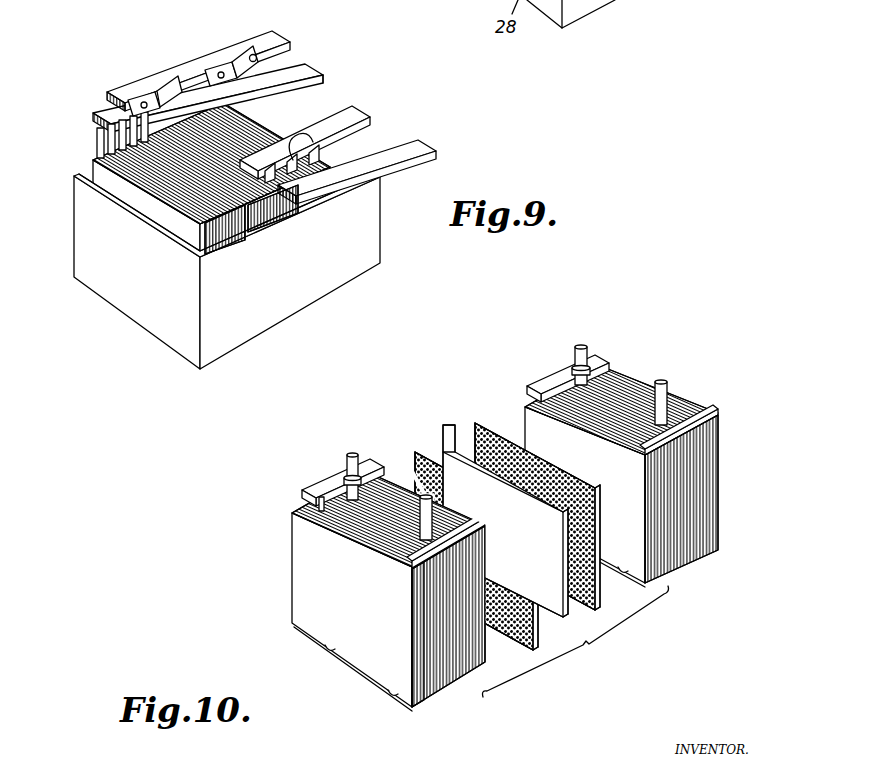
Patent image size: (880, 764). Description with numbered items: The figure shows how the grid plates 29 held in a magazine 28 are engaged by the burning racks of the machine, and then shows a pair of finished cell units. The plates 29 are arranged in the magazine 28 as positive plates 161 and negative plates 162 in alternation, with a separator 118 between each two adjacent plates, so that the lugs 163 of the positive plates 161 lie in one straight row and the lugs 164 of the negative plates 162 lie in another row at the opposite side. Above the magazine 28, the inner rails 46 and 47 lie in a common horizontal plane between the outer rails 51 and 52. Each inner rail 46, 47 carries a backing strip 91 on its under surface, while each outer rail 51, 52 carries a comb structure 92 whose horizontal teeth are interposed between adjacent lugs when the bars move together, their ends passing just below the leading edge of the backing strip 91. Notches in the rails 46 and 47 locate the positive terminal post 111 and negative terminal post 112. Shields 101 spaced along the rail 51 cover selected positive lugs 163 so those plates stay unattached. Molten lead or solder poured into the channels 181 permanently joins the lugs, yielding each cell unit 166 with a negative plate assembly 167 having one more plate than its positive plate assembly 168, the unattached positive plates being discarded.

In FIG. 9, the magazine 28 is at (160, 318).
In FIG. 9, the grid plates 29 is at (128, 196).
In FIG. 10, the grid plates 29 is at (322, 572).
In FIG. 9, the rail 46 is at (352, 116).
In FIG. 9, the rail 47 is at (283, 83).
In FIG. 9, the rail 51 is at (396, 151).
In FIG. 9, the rail 52 is at (197, 70).
In FIG. 9, the backing strip 91 is at (309, 91).
In FIG. 9, the comb structure 92 is at (282, 221).
In FIG. 9, the shield 101 is at (262, 52).
In FIG. 10, the positive terminal post 111 is at (668, 392).
In FIG. 10, the negative terminal post 112 is at (586, 345).
In FIG. 10, the separator 118 is at (505, 445).
In FIG. 9, the positive plates 161 is at (172, 224).
In FIG. 10, the positive plates 161 is at (322, 642).
In FIG. 10, the negative plates 162 is at (462, 458).
In FIG. 9, the lugs 163 is at (232, 238).
In FIG. 10, the lugs 163 is at (406, 581).
In FIG. 9, the lugs 164 is at (97, 146).
In FIG. 10, the lugs 164 is at (302, 500).
In FIG. 10, the cell unit 166 is at (722, 500).
In FIG. 10, the negative plate assembly 167 is at (720, 410).
In FIG. 10, the positive plate assembly 168 is at (560, 372).
In FIG. 9, the channels 181 is at (312, 170).